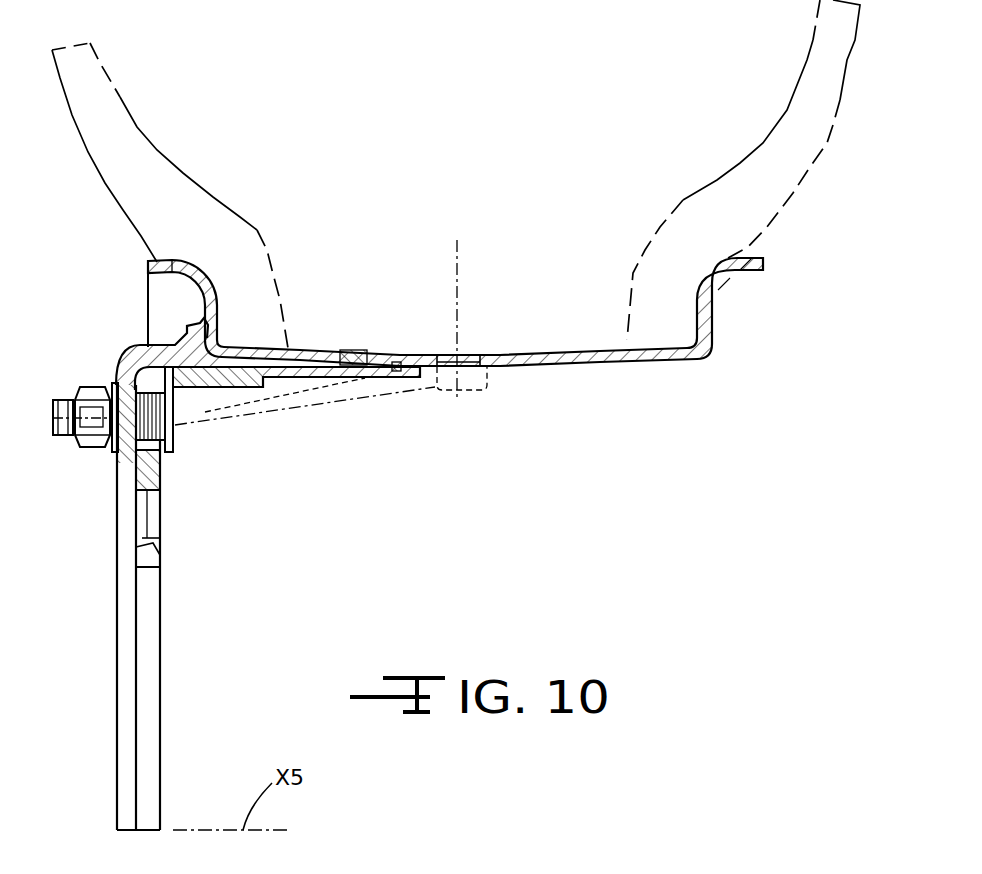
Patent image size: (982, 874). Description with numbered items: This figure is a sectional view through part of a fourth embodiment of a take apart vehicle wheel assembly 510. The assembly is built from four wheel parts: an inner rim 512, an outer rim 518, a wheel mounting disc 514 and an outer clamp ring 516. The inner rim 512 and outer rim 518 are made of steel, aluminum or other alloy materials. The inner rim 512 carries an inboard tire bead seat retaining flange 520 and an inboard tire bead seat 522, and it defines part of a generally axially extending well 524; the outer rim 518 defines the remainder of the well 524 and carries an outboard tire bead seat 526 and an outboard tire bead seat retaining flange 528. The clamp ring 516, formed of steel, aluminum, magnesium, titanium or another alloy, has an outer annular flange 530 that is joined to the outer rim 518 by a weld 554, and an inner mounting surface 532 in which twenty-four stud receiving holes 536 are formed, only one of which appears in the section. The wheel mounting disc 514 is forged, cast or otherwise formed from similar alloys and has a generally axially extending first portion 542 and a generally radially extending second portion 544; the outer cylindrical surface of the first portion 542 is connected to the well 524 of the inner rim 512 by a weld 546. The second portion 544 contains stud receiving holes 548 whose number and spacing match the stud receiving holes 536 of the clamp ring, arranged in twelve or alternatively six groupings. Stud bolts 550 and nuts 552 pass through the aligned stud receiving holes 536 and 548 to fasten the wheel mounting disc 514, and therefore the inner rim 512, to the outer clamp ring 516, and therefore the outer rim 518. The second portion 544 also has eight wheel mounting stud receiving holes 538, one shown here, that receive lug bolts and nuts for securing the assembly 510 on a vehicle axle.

The take apart vehicle wheel assembly 510 is at (115, 255).
The inner rim 512 is at (660, 380).
The wheel mounting disc 514 is at (183, 405).
The outer clamp ring 516 is at (123, 350).
The outer rim 518 is at (250, 298).
The inboard tire bead seat retaining flange 520 is at (705, 285).
The inboard tire bead seat 522 is at (682, 347).
The well 524 is at (467, 357).
The outboard tire bead seat 526 is at (233, 345).
The outboard tire bead seat retaining flange 528 is at (188, 270).
The outer annular flange 530 is at (197, 322).
The inner mounting surface 532 is at (115, 455).
The stud receiving hole 536 is at (108, 437).
The wheel mounting stud receiving hole 538 is at (143, 552).
The first portion 542 is at (247, 383).
The second portion 544 is at (153, 552).
The weld 546 is at (397, 370).
The stud receiving hole 548 is at (158, 448).
The stud bolt 550 is at (52, 403).
The nut 552 is at (95, 390).
The weld 554 is at (197, 322).